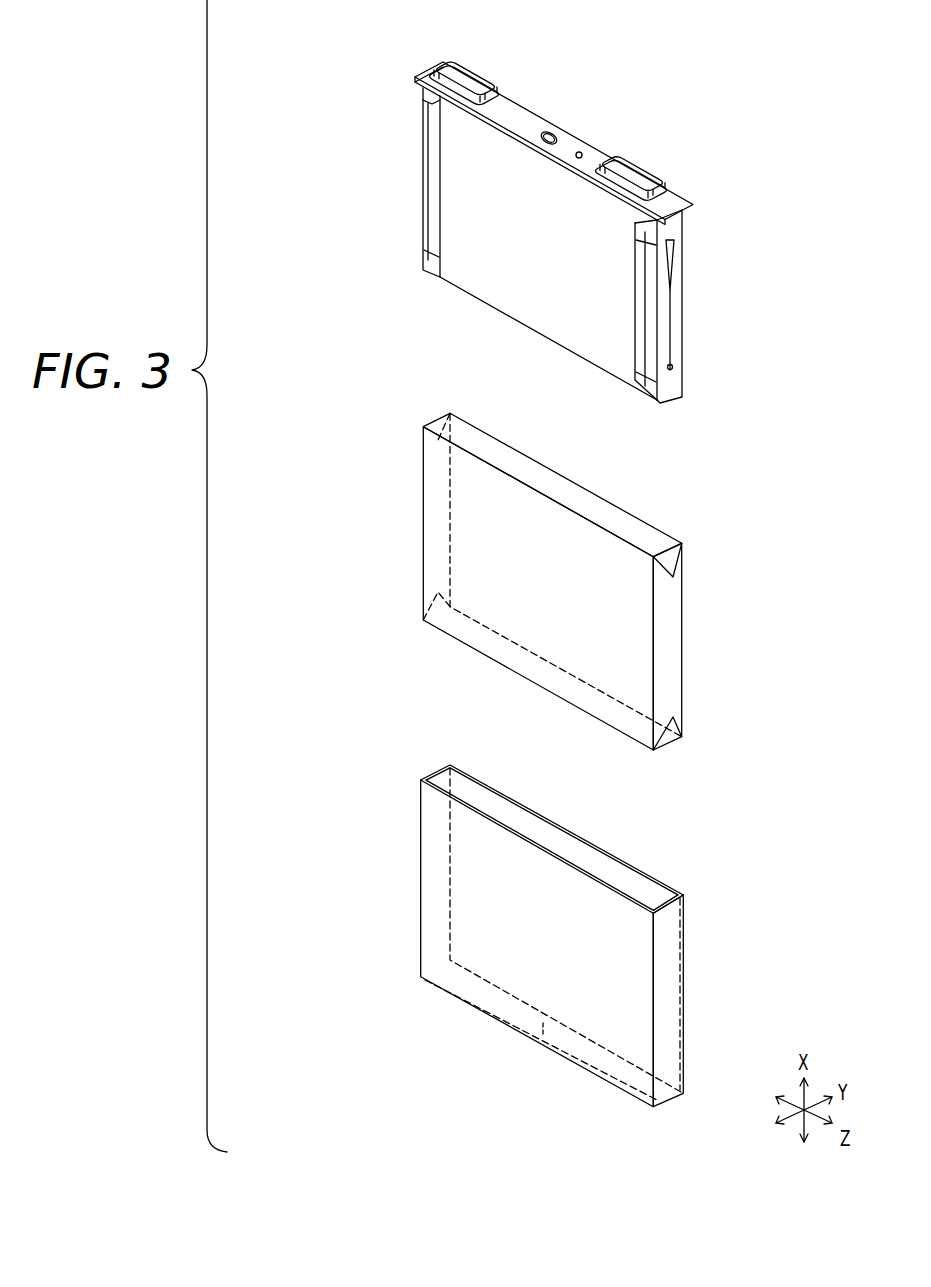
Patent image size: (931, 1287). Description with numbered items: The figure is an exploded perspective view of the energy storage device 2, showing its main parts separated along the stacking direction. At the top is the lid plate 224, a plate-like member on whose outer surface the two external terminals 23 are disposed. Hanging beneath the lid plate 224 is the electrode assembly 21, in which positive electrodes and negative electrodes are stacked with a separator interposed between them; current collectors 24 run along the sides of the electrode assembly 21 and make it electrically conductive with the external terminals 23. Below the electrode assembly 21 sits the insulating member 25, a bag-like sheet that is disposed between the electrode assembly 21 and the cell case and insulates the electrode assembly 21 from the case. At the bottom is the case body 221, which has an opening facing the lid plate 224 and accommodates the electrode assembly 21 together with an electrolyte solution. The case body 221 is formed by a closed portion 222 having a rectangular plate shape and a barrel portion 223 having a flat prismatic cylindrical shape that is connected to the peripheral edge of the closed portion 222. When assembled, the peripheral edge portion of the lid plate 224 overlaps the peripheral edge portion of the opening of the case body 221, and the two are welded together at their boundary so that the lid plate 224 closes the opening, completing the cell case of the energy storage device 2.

The energy storage device 2 is at (690, 143).
The electrode assembly 21 is at (500, 268).
The external terminal 23 is at (467, 78).
The current collector 24 is at (425, 107).
The lid plate 224 is at (425, 73).
The insulating member 25 is at (422, 523).
The case body 221 is at (416, 850).
The closed portion 222 is at (542, 1030).
The barrel portion 223 is at (668, 952).